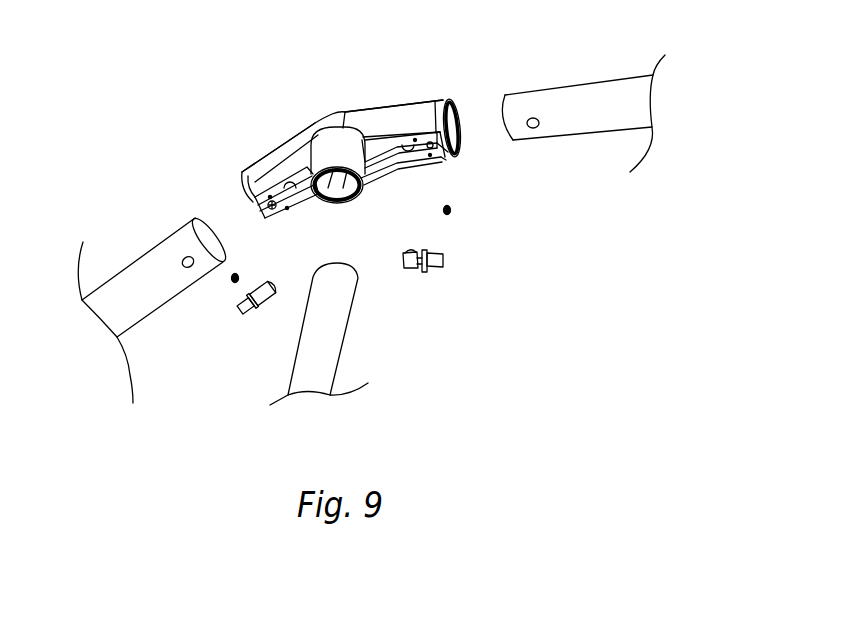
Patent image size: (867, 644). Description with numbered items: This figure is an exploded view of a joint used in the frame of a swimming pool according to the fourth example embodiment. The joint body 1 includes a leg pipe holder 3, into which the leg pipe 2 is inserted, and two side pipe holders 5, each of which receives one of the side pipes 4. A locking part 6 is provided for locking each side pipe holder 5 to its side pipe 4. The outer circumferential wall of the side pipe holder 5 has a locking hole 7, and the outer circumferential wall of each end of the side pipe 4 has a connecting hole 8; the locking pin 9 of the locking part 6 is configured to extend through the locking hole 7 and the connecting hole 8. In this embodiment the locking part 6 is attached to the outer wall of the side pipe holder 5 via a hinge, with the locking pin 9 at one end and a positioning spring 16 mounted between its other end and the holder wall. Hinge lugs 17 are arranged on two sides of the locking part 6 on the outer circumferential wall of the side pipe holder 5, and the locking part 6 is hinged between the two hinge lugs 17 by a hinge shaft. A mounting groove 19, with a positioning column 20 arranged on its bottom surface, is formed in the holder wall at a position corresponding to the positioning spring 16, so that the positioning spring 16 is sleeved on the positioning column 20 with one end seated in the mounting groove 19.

The joint body 1 is at (369, 138).
The leg pipe 2 is at (320, 323).
The leg pipe holder 3 is at (335, 160).
The side pipe 4 is at (143, 272).
The side pipe holder 5 is at (273, 162).
The locking part 6 is at (420, 257).
The locking hole 7 is at (411, 162).
The connecting hole 8 is at (537, 127).
The locking pin 9 is at (405, 262).
The positioning spring 16 is at (450, 213).
The hinge lug 17 is at (410, 145).
The mounting groove 19 is at (448, 152).
The positioning column 20 is at (445, 157).